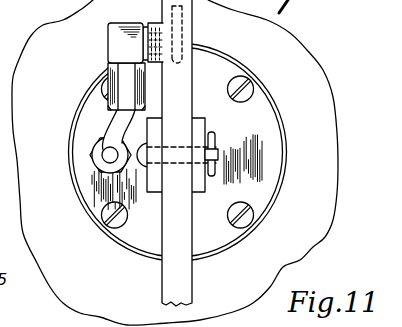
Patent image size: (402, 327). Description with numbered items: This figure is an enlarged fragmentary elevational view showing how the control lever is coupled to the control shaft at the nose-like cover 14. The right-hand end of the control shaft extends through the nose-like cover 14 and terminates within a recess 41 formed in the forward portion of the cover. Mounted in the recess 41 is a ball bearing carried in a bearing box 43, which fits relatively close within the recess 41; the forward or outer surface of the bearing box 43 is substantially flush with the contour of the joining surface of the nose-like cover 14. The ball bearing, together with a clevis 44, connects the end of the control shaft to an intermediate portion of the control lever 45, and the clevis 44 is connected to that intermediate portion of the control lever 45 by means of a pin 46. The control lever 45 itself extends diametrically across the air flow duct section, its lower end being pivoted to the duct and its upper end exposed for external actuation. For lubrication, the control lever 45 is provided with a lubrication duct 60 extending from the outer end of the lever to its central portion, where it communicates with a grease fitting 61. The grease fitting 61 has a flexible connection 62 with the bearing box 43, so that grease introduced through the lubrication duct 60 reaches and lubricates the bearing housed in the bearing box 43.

The nose-like cover 14 is at (58, 297).
The recess 41 is at (286, 167).
The bearing box 43 is at (268, 120).
The clevis 44 is at (199, 193).
The control lever 45 is at (162, 285).
The pin 46 is at (215, 149).
The lubrication duct 60 is at (192, 24).
The grease fitting 61 is at (108, 49).
The flexible connection 62 is at (113, 123).